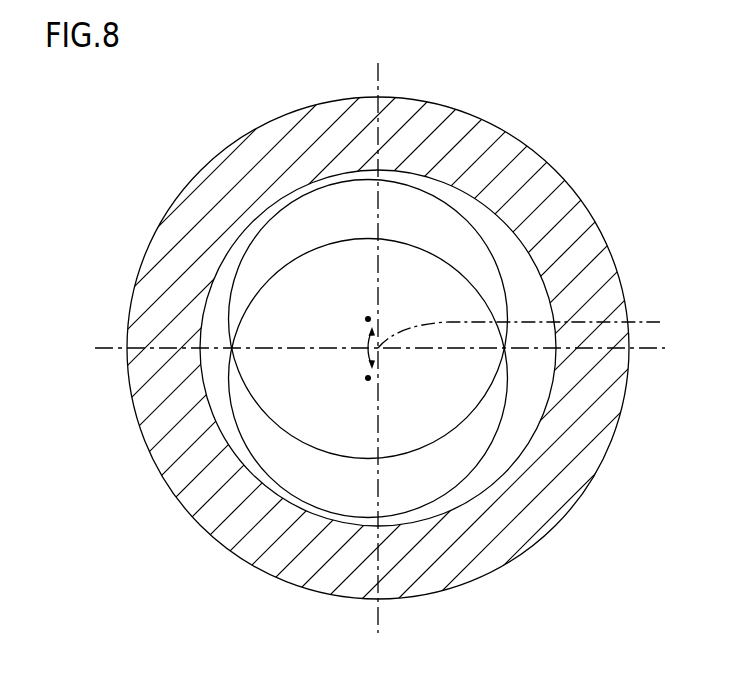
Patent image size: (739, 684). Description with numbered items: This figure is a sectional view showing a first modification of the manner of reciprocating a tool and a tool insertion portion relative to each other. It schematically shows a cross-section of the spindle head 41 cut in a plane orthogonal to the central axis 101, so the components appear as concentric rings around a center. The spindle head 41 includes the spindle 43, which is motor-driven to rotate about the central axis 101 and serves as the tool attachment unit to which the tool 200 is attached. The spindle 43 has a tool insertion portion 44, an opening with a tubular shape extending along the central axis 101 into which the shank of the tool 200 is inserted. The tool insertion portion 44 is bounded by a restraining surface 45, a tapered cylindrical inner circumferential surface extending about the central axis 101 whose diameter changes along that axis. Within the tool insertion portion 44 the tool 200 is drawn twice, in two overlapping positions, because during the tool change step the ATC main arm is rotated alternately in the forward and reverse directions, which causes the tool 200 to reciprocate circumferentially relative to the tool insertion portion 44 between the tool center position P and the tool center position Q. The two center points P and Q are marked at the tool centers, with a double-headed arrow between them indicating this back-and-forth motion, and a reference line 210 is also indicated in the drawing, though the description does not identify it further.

The spindle head 41 is at (369, 342).
The spindle 43 is at (512, 138).
The tool insertion portion 44 is at (253, 158).
The restraining surface 45 is at (201, 373).
The tool 200 is at (344, 180).
The shaft clearance / bore 210 is at (533, 378).
The central axis 101 is at (537, 326).
The tool center position P is at (371, 317).
The tool center position Q is at (371, 381).